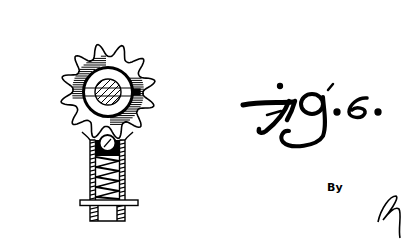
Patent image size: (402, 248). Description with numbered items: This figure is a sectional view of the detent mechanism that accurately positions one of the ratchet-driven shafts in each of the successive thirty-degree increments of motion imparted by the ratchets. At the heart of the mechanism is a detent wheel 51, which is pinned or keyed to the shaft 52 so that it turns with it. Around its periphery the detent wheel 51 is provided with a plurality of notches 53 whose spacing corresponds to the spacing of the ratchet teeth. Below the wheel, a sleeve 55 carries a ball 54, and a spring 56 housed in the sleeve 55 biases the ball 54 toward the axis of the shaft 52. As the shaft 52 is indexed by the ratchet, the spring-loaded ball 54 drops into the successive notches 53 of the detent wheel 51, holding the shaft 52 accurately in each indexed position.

The detent wheel 51 is at (129, 57).
The shaft 52 is at (118, 83).
The notches 53 is at (141, 93).
The ball 54 is at (115, 142).
The sleeve 55 is at (123, 165).
The spring 56 is at (123, 176).